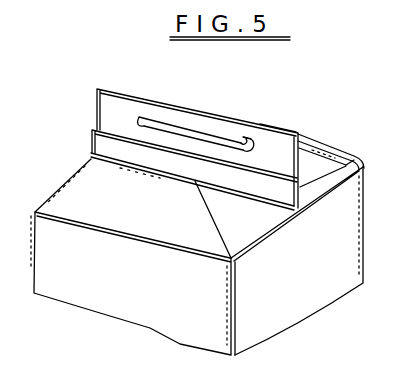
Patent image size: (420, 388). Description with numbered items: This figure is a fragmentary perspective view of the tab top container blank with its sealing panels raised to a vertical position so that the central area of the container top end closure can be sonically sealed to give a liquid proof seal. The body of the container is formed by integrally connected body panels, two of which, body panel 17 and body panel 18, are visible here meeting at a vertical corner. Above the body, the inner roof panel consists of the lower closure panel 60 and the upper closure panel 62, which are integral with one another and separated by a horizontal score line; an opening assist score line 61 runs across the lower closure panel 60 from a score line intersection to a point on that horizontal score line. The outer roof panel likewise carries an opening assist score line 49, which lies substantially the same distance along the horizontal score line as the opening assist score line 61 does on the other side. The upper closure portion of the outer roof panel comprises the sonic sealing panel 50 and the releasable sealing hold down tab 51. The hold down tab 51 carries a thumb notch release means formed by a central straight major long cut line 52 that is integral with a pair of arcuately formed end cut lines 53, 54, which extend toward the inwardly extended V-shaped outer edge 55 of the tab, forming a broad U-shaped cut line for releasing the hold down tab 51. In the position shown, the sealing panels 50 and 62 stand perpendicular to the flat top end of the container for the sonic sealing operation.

The body panel 17 is at (133, 283).
The body panel 18 is at (297, 260).
The opening assist score line 49 is at (336, 171).
The sonic sealing panel 50 is at (285, 167).
The sealing hold down tab 51 is at (273, 137).
The central straight major long cut line 52 is at (177, 132).
The end cut line 53 is at (251, 134).
The end cut line 54 is at (150, 114).
The inwardly extended V-shaped outer edge 55 is at (227, 125).
The lower closure panel 60 is at (164, 186).
The opening assist score line 61 is at (217, 227).
The upper closure panel 62 is at (194, 156).